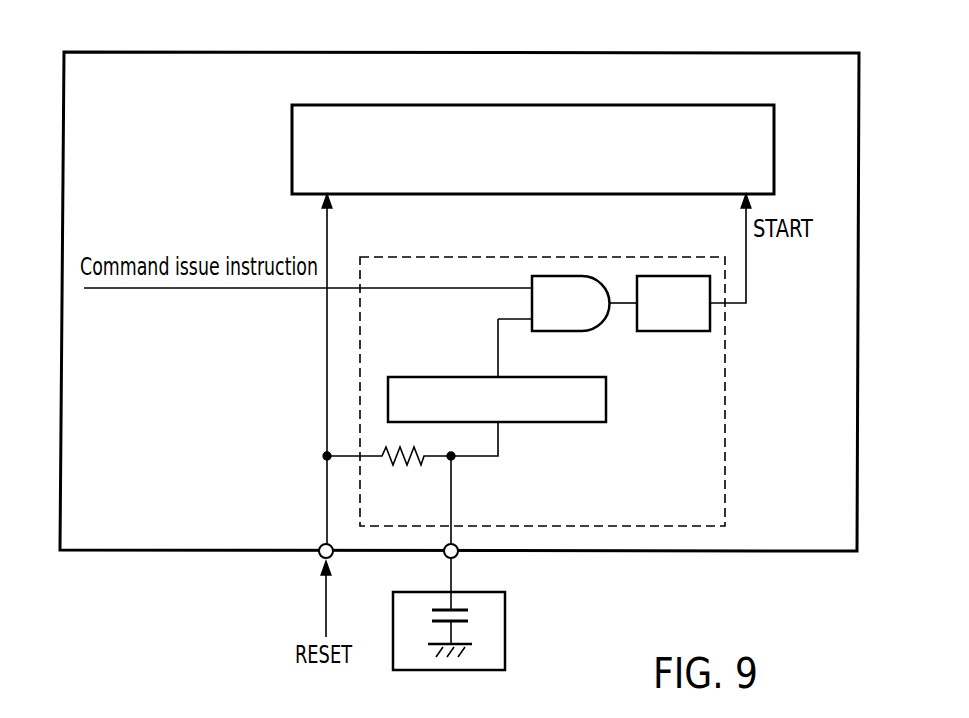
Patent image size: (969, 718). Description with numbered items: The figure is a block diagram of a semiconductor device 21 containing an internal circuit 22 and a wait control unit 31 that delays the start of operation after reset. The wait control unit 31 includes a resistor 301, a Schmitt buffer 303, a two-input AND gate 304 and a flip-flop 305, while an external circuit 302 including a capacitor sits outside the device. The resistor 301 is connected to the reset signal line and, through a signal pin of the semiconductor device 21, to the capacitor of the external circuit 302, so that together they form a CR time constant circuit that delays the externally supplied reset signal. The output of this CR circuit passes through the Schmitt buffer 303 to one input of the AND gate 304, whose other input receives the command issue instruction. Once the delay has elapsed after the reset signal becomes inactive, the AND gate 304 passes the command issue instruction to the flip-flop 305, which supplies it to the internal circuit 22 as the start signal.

The semiconductor device 21 is at (795, 52).
The internal circuit 22 is at (776, 143).
The wait control unit 31 is at (726, 443).
The resistor 301 is at (405, 470).
The external circuit 302 is at (506, 625).
The Schmitt buffer 303 is at (420, 376).
The 2-input AND gate 304 is at (597, 332).
The flip-flop 305 is at (686, 333).